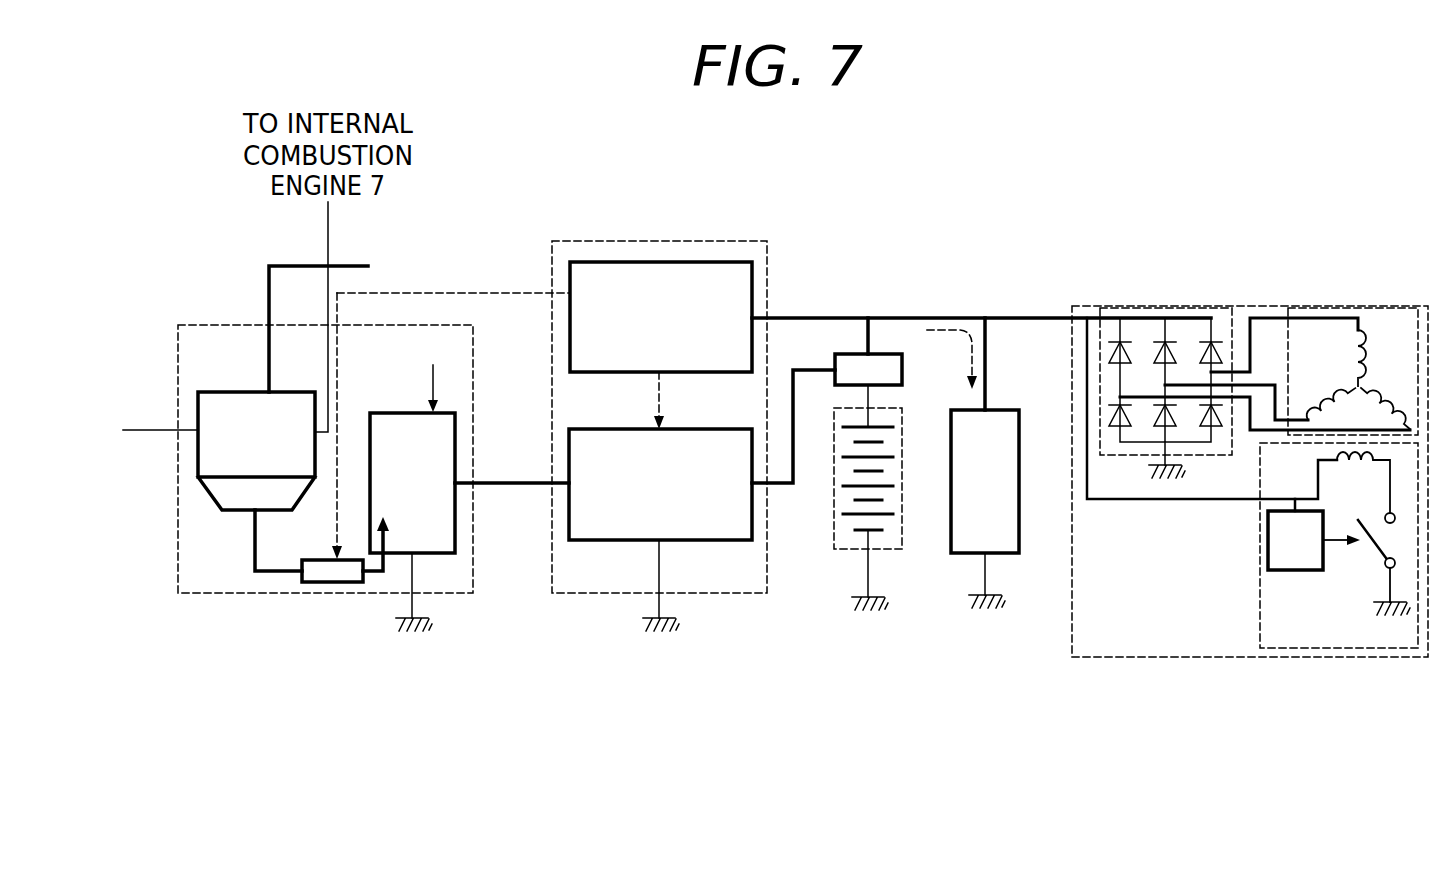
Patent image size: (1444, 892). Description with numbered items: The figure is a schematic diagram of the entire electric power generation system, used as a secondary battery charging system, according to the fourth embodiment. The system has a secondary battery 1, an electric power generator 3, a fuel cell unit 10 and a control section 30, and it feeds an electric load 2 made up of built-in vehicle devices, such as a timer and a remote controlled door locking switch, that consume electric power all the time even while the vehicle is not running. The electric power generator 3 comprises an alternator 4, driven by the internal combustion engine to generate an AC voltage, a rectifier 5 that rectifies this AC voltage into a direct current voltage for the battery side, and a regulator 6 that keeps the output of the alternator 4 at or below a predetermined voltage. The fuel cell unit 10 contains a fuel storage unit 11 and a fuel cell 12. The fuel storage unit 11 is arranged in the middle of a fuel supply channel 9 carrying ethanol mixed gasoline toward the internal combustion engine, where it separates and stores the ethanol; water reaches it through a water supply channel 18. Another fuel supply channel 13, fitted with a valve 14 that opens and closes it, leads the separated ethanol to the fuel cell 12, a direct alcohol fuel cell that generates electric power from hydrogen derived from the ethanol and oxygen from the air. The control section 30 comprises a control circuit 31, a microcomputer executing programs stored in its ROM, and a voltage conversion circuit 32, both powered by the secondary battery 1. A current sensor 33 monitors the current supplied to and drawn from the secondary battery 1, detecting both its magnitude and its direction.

The secondary battery 1 is at (833, 520).
The electric load 2 is at (1005, 410).
The electric power generator 3 is at (1112, 296).
The alternator 4 is at (1358, 307).
The rectifier 5 is at (1195, 307).
The regulator 6 is at (1358, 657).
The fuel supply channel 9 is at (140, 430).
The fuel cell unit 10 is at (175, 551).
The fuel storage unit 11 is at (225, 390).
The fuel cell 12 is at (455, 533).
The fuel supply channel 13 is at (263, 573).
The valve 14 is at (330, 585).
The water supply channel 18 is at (348, 263).
The control section 30 is at (640, 233).
The control circuit 31 is at (722, 262).
The voltage conversion circuit 32 is at (710, 542).
The current sensor 33 is at (848, 353).